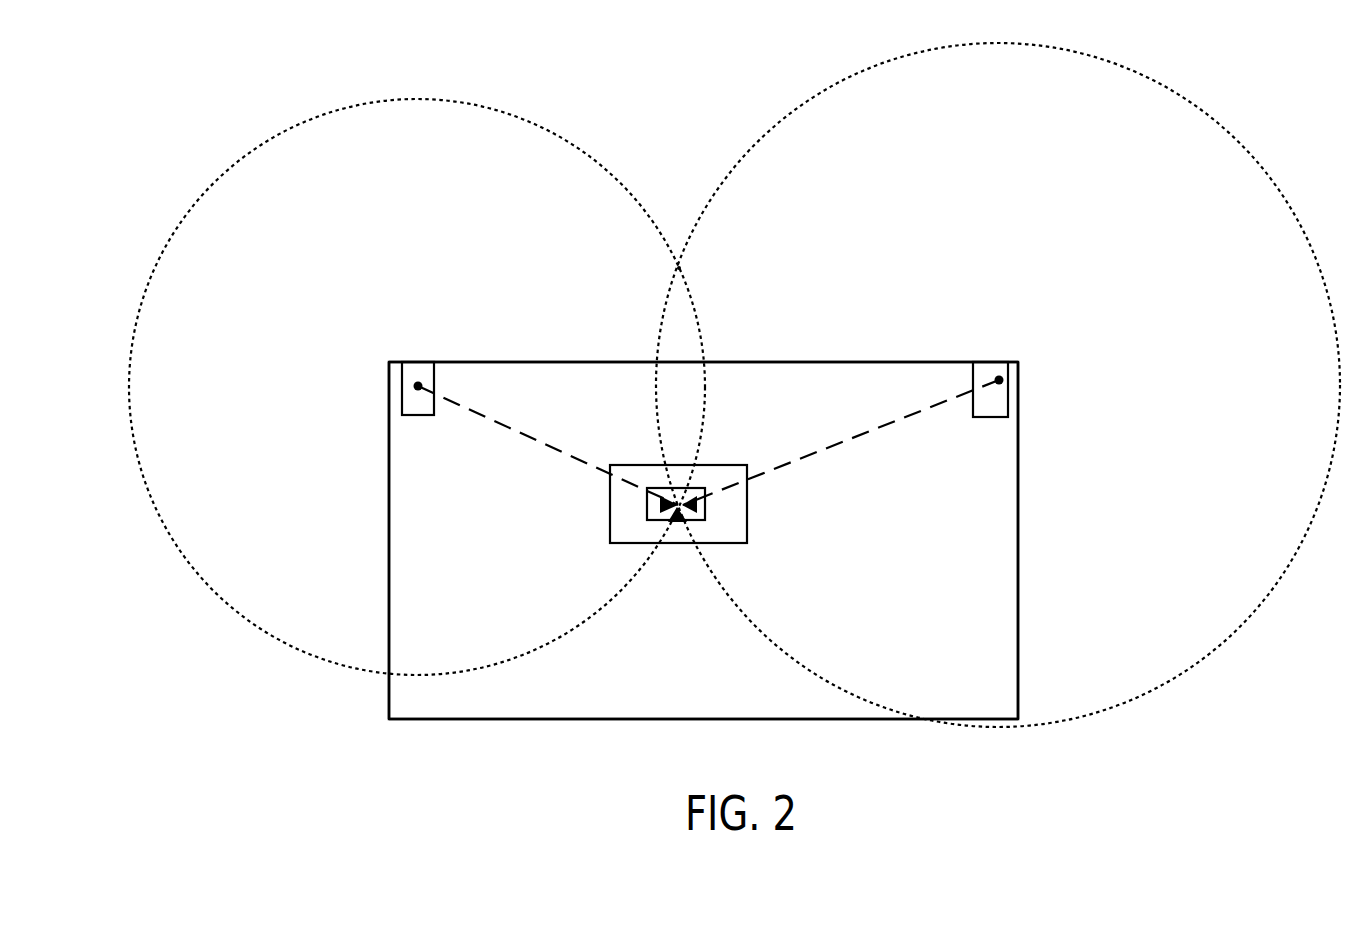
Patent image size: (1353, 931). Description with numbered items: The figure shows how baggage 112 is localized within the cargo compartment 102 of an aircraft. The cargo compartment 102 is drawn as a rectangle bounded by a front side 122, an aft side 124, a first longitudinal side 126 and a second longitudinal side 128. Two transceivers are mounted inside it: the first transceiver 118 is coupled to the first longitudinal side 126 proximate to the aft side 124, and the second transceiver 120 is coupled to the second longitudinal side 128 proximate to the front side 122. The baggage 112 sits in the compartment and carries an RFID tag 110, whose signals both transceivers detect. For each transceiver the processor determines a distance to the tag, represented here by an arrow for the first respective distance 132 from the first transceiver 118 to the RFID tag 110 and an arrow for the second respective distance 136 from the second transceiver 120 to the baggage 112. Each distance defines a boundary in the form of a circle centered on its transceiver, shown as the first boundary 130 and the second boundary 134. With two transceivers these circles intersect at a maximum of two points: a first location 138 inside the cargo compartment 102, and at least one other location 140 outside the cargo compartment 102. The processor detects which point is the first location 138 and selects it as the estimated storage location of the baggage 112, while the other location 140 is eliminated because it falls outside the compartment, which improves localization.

The cargo compartment 102 is at (985, 690).
The RFID tag 110 is at (647, 508).
The baggage 112 is at (748, 534).
The first transceiver 118 is at (422, 368).
The second transceiver 120 is at (995, 368).
The front side 122 is at (1020, 545).
The aft side 124 is at (389, 518).
The first longitudinal side 126 is at (852, 361).
The second longitudinal side 128 is at (533, 721).
The first boundary 130 is at (247, 153).
The first respective distance 132 is at (512, 437).
The second boundary 134 is at (765, 135).
The second respective distance 136 is at (872, 432).
The first location 138 is at (677, 522).
The other location 140 is at (700, 268).